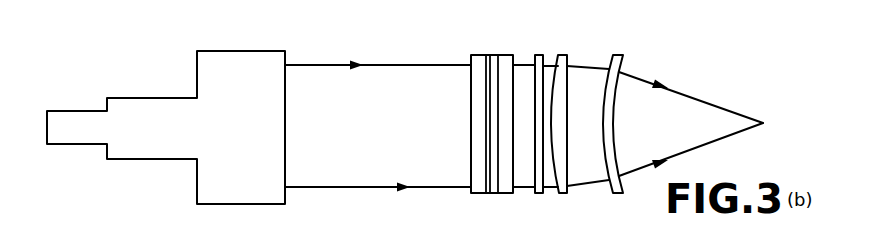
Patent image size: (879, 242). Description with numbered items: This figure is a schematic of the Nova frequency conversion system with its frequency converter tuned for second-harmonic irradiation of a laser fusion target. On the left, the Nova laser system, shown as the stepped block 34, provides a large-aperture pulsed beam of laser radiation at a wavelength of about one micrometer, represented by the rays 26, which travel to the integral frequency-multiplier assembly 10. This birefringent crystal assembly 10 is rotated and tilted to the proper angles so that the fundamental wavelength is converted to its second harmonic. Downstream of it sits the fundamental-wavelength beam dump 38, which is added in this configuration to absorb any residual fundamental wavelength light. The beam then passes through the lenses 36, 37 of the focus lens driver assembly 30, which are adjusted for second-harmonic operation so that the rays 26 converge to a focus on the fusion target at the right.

The laser source 34 is at (183, 140).
The rays 26 is at (412, 65).
The integral frequency-multiplier assembly 10 is at (473, 55).
The fundamental-wavelength beam dump 38 is at (538, 55).
The lens 36 is at (562, 55).
The lens 37 is at (620, 55).
The focus lens driver assembly 30 is at (603, 123).